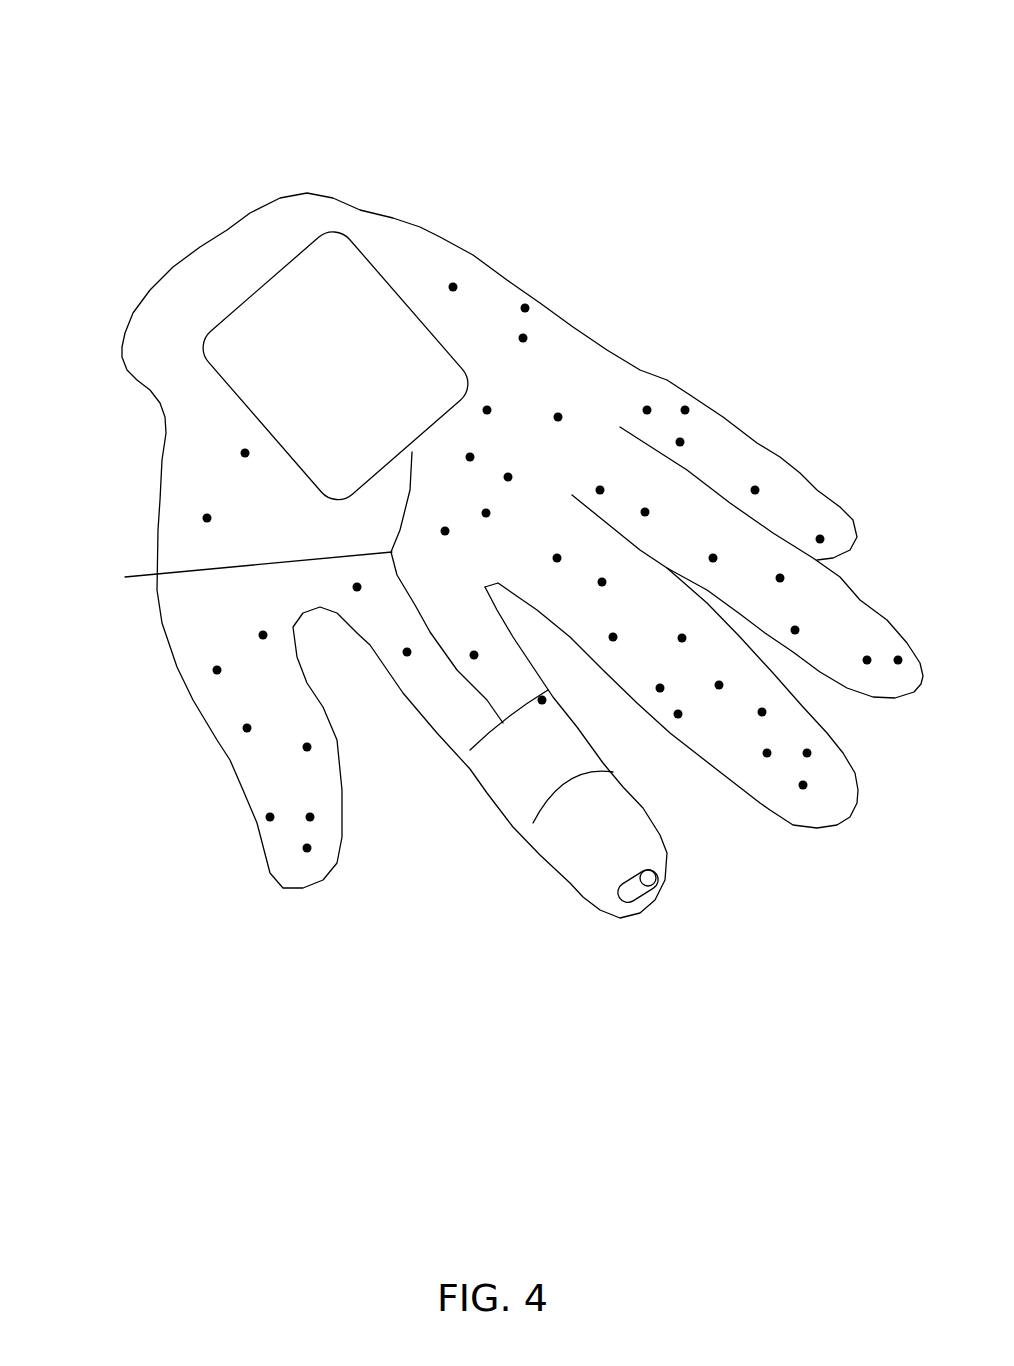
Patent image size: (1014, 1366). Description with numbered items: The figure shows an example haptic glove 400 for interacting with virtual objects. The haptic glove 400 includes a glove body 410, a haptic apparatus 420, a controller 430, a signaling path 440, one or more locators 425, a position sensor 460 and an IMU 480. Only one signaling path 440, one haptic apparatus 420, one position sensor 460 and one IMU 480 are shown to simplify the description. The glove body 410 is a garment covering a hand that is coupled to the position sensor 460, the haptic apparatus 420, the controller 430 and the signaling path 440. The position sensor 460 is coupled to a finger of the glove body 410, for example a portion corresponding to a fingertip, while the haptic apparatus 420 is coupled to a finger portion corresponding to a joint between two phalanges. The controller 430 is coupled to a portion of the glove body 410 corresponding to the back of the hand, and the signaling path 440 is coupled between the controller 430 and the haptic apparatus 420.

The haptic glove 400 is at (470, 537).
The glove body 410 is at (167, 418).
The haptic apparatus 420 is at (513, 778).
The locators 425 is at (685, 408).
The controller 430 is at (322, 292).
The signaling path 440 is at (213, 584).
The position sensor 460 is at (660, 878).
The IMU 480 is at (618, 895).